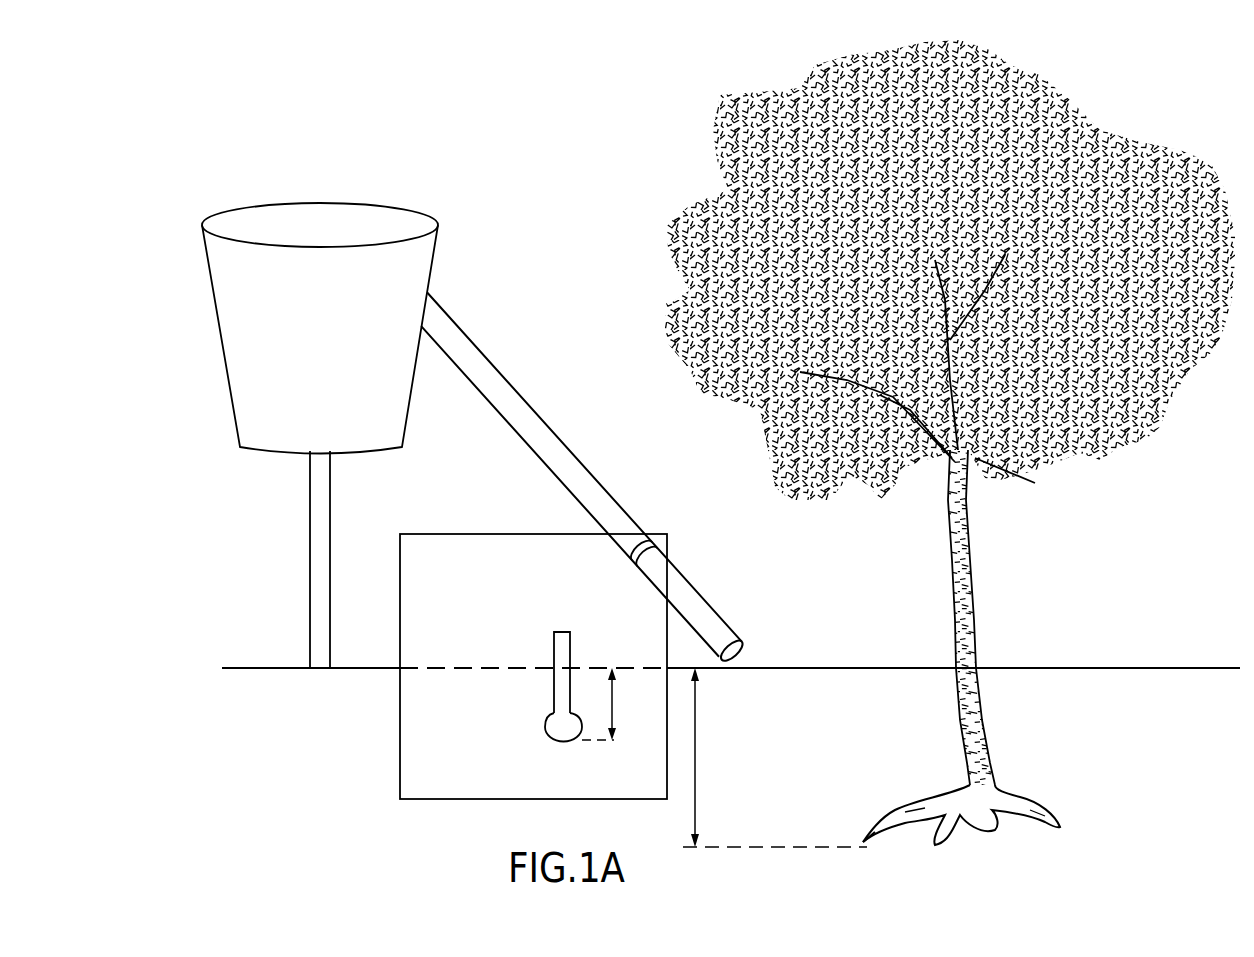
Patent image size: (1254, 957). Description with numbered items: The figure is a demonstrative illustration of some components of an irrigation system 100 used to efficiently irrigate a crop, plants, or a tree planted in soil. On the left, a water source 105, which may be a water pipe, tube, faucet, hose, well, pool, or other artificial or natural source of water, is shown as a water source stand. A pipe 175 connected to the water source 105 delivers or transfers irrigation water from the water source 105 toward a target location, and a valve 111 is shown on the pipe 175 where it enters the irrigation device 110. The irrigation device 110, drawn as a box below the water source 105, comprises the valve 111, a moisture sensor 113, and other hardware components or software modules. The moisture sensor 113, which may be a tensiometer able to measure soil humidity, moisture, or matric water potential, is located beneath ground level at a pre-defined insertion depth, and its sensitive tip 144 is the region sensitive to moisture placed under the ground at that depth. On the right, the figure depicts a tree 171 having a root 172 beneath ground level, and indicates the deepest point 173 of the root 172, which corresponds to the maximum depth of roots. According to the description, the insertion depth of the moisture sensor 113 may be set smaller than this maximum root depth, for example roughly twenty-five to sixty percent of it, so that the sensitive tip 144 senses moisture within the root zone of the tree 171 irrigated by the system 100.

The system 100 is at (503, 138).
The water source 105 is at (277, 203).
The pipe 175 is at (510, 385).
The valve 111 is at (659, 532).
The irrigation device 110 is at (467, 534).
The moisture sensor 113 is at (554, 648).
The sensitive tip 144 is at (546, 728).
The tree 171 is at (702, 212).
The root 172 is at (1022, 788).
The deepest point 173 is at (855, 835).